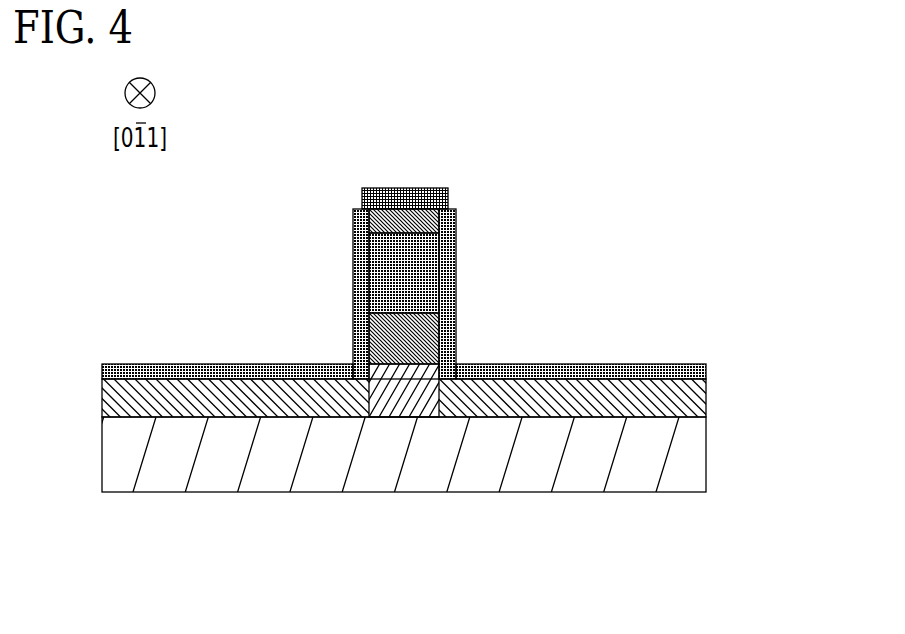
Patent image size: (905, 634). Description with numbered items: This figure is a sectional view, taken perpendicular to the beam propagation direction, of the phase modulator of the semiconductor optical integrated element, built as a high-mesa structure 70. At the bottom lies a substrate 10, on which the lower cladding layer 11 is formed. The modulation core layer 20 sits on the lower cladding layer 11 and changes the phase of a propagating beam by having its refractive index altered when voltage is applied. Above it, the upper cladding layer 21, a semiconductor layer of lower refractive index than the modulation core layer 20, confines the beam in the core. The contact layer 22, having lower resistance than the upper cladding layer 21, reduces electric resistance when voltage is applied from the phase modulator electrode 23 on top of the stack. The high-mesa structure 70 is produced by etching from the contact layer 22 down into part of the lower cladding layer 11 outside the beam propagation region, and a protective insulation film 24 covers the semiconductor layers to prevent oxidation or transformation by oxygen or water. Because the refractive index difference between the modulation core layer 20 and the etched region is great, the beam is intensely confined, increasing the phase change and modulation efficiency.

The high-mesa structure 70 is at (417, 88).
The substrate 10 is at (228, 460).
The lower cladding layer 11 is at (115, 400).
The modulation core layer 20 is at (408, 340).
The upper cladding layer 21 is at (393, 280).
The contact layer 22 is at (360, 208).
The phase modulator electrode 23 is at (405, 187).
The protective insulation film 24 is at (157, 366).